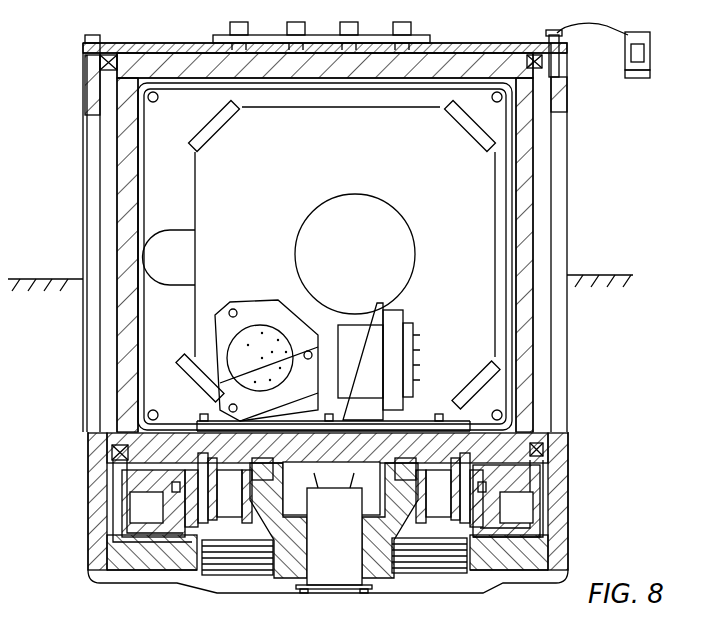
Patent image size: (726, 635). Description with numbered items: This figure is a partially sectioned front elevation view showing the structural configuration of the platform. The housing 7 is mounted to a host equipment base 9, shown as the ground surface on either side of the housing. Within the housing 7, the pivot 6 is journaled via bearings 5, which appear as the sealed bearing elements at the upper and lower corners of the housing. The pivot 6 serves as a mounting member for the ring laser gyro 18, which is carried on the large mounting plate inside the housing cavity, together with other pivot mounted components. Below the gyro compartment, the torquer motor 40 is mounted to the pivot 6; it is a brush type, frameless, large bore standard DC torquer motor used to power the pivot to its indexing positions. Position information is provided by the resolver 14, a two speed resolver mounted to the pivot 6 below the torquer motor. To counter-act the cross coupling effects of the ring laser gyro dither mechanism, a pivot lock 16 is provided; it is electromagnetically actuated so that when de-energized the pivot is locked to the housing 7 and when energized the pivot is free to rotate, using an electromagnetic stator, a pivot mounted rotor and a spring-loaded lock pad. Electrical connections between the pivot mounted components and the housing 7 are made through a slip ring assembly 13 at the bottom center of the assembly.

The bearings 5 is at (107, 52).
The pivot 6 is at (117, 165).
The housing 7 is at (83, 137).
The host equipment base 9 is at (606, 275).
The slip ring assembly 13 is at (328, 590).
The resolver 14 is at (247, 584).
The pivot lock 16 is at (100, 514).
The ring laser gyro 18 is at (195, 302).
The torquer motor 40 is at (192, 545).